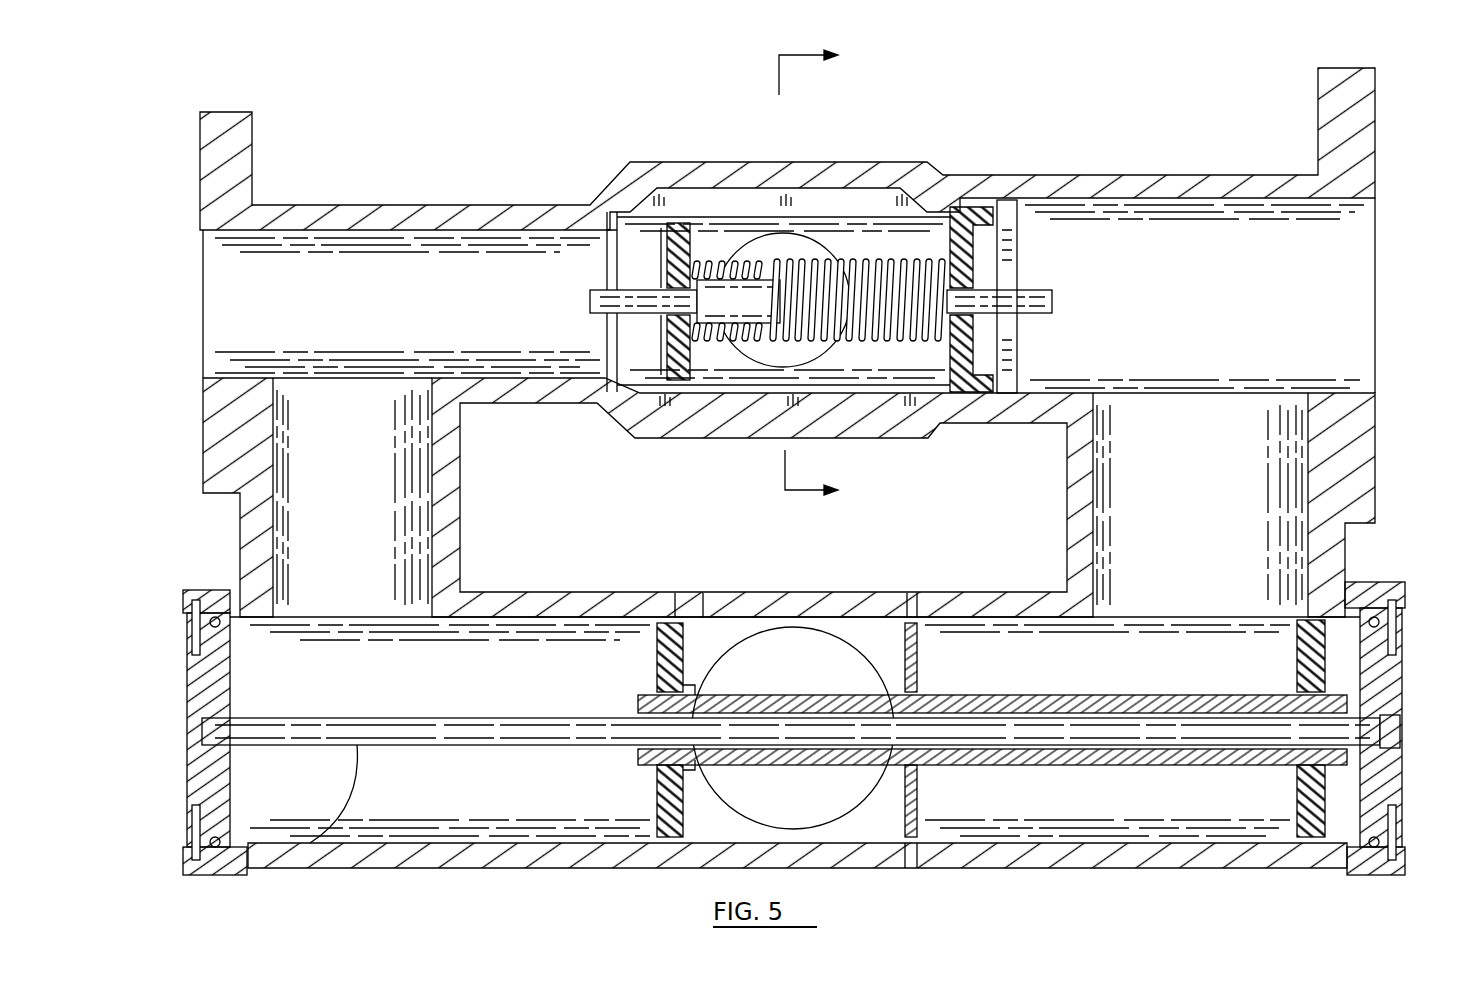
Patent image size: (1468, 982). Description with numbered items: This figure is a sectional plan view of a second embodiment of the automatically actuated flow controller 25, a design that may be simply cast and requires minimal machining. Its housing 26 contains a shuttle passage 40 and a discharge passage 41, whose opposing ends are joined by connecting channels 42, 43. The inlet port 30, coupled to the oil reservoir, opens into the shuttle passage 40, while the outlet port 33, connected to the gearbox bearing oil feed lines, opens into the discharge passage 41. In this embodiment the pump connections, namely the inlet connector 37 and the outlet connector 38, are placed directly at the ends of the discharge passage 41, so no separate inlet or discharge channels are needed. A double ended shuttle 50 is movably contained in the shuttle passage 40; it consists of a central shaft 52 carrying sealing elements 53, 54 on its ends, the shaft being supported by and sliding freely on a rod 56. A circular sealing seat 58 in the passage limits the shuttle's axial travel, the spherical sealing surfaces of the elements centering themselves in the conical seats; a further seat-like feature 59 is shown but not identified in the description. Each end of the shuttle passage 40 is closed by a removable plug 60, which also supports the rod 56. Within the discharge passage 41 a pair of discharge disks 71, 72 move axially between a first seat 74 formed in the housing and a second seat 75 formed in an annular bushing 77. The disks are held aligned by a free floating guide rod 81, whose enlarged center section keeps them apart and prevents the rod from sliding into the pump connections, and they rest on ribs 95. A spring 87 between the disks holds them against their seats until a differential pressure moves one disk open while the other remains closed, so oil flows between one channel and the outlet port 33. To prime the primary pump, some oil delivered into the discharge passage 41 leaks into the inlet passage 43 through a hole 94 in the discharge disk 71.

The flow controller 25 is at (1190, 102).
The flow controller housing 26 is at (280, 205).
The inlet port 30 is at (817, 810).
The outlet port 33 is at (780, 240).
The inlet connector 37 is at (203, 335).
The outlet connector 38 is at (1375, 282).
The shuttle passage 40 is at (770, 730).
The discharge passage 41 is at (785, 301).
The connecting channel 42 is at (1199, 505).
The connecting channel 43 is at (352, 497).
The double ended shuttle 50 is at (1293, 763).
The central shaft 52 is at (1102, 763).
The sealing element 53 is at (657, 845).
The sealing element 54 is at (1325, 680).
The rod 56 is at (305, 850).
The sealing seat 58 is at (705, 593).
The port 59 is at (908, 593).
The plug 60 is at (187, 670).
The discharge disk 71 is at (670, 345).
The discharge disk 72 is at (1000, 333).
The first seat 74 is at (612, 222).
The second seat 75 is at (1000, 222).
The annular bushing 77 is at (990, 207).
The guide rod 81 is at (1035, 290).
The spring 87 is at (710, 262).
The hole 94 is at (668, 238).
The ribs 95 is at (860, 210).